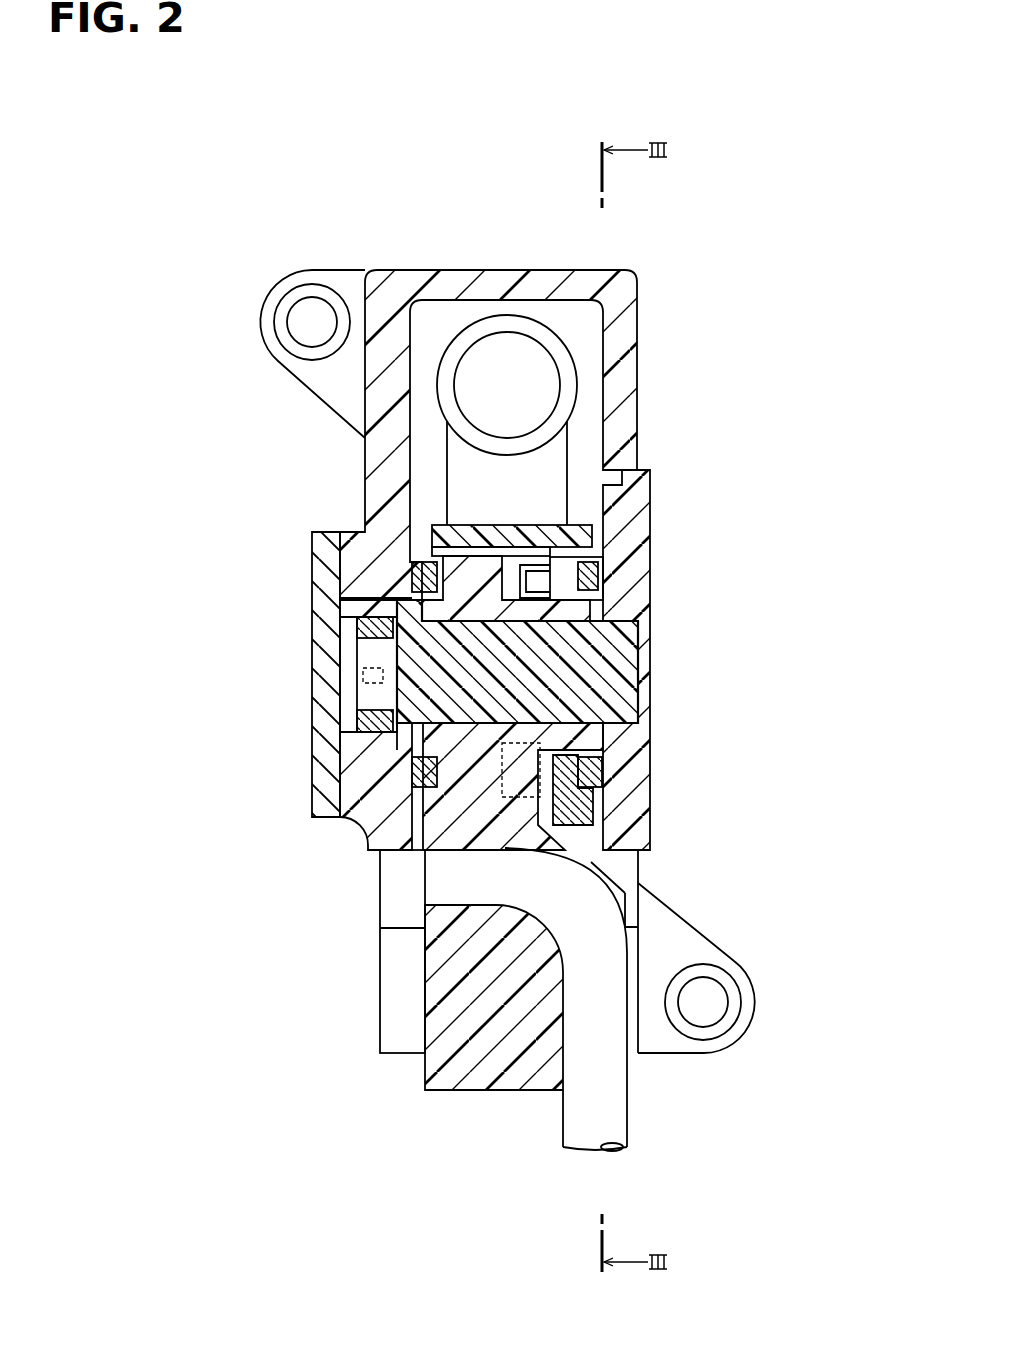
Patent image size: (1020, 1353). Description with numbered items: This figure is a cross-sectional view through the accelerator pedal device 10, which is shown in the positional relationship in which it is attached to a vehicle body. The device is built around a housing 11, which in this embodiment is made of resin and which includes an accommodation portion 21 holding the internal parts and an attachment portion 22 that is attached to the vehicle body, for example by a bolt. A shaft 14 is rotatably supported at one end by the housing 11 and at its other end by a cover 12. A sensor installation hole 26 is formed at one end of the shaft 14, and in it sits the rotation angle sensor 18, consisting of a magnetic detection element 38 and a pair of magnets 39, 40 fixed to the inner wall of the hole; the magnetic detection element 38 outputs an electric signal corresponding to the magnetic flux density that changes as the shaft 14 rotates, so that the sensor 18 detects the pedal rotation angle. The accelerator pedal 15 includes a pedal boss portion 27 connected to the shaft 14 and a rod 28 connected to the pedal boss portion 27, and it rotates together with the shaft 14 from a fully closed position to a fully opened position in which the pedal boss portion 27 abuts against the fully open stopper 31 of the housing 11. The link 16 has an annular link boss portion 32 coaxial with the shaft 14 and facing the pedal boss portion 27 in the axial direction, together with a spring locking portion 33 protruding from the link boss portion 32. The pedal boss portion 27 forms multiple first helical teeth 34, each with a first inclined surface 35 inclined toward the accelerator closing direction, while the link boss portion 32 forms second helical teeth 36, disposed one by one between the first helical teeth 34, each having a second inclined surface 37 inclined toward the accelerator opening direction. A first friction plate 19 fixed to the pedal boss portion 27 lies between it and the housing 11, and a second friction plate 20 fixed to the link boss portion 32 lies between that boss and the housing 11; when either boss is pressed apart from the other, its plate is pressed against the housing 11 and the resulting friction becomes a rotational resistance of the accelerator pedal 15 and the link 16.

The accelerator pedal device 10 is at (361, 247).
The housing 11 is at (233, 396).
The cover 12 is at (636, 606).
The shaft 14 is at (574, 680).
The accelerator pedal 15 is at (423, 1005).
The link 16 is at (574, 457).
The rotation angle sensor 18 is at (251, 608).
The first friction plate 19 is at (420, 776).
The second friction plate 20 is at (600, 772).
The accommodation portion 21 is at (385, 456).
The attachment portion 22 is at (317, 380).
The sensor installation hole 26 is at (375, 720).
The pedal boss portion 27 is at (470, 587).
The rod 28 is at (606, 1103).
The fully open stopper 31 is at (392, 930).
The link boss portion 32 is at (566, 582).
The spring locking portion 33 is at (517, 383).
The first helical teeth 34 is at (512, 548).
The first inclined surface 35 is at (556, 553).
The second helical teeth 36 is at (548, 576).
The second inclined surface 37 is at (572, 792).
The magnetic detection element 38 is at (365, 678).
The magnet 39 is at (372, 630).
The magnet 40 is at (352, 702).